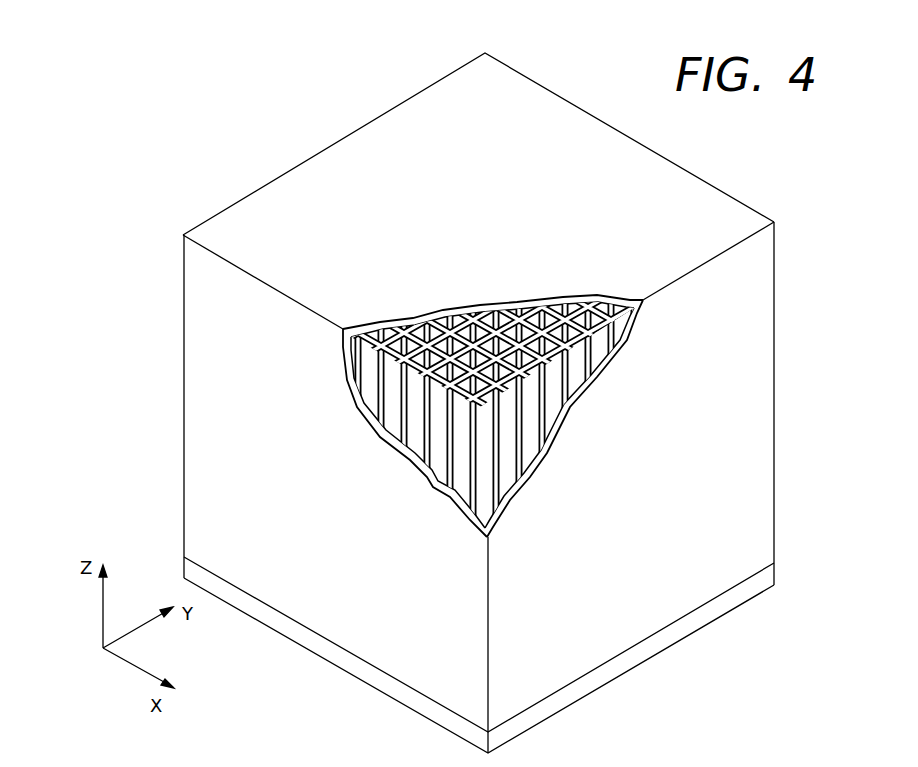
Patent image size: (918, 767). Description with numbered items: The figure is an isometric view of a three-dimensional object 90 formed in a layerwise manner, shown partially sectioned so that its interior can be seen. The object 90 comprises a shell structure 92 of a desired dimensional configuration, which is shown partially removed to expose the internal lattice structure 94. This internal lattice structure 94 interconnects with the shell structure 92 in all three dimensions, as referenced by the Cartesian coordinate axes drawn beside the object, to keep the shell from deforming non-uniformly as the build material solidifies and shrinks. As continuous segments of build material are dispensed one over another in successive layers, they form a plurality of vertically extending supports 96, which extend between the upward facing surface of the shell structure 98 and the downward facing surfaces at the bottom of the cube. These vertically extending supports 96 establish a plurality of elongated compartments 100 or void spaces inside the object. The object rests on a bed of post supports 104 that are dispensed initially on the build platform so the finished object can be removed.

The three-dimensional object 90 is at (247, 133).
The shell structure 92 is at (687, 190).
The internal lattice structure 94 is at (450, 335).
The vertically extending supports 96 is at (511, 347).
The upward facing surface of the shell structure 98 is at (387, 157).
The elongated compartments 100 is at (433, 328).
The bed of post supports 104 is at (351, 658).